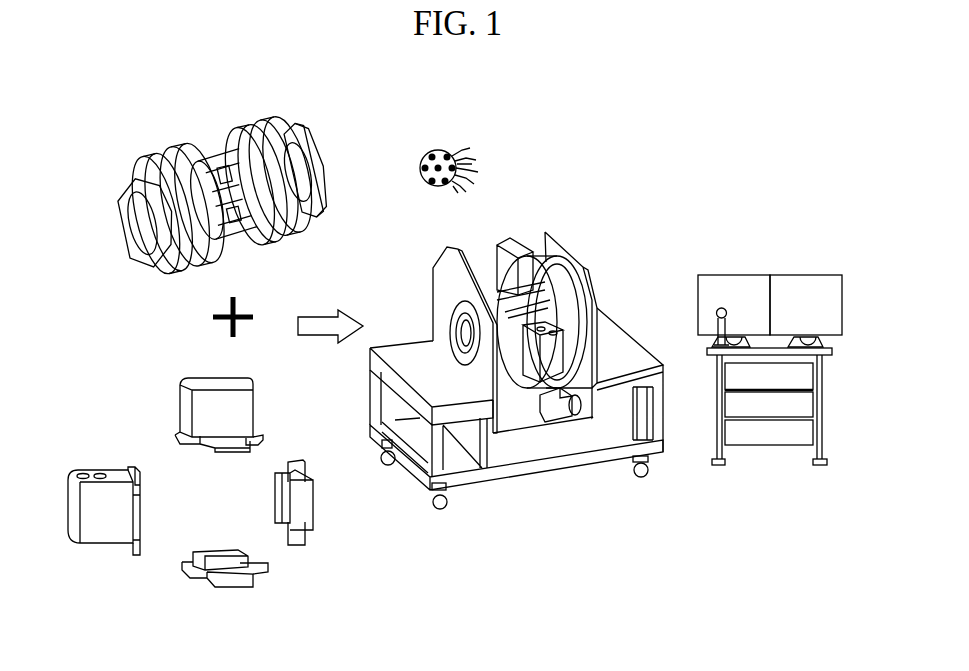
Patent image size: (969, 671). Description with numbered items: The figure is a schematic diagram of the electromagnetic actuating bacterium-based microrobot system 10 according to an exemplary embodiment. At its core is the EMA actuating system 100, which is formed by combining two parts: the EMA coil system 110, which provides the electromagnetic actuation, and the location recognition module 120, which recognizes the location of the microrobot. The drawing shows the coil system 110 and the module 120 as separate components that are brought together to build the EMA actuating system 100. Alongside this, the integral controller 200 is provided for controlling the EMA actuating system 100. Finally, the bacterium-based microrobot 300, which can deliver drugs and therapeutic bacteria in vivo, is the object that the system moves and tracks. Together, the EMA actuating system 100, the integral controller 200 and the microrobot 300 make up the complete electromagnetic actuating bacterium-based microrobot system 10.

The electromagnetic actuating bacterium-based microrobot system 10 is at (673, 159).
The EMA actuating system 100 is at (563, 484).
The EMA coil system 110 is at (198, 132).
The location recognition module 120 is at (313, 577).
The integral controller 200 is at (780, 471).
The bacterium-based microrobot 300 is at (448, 149).